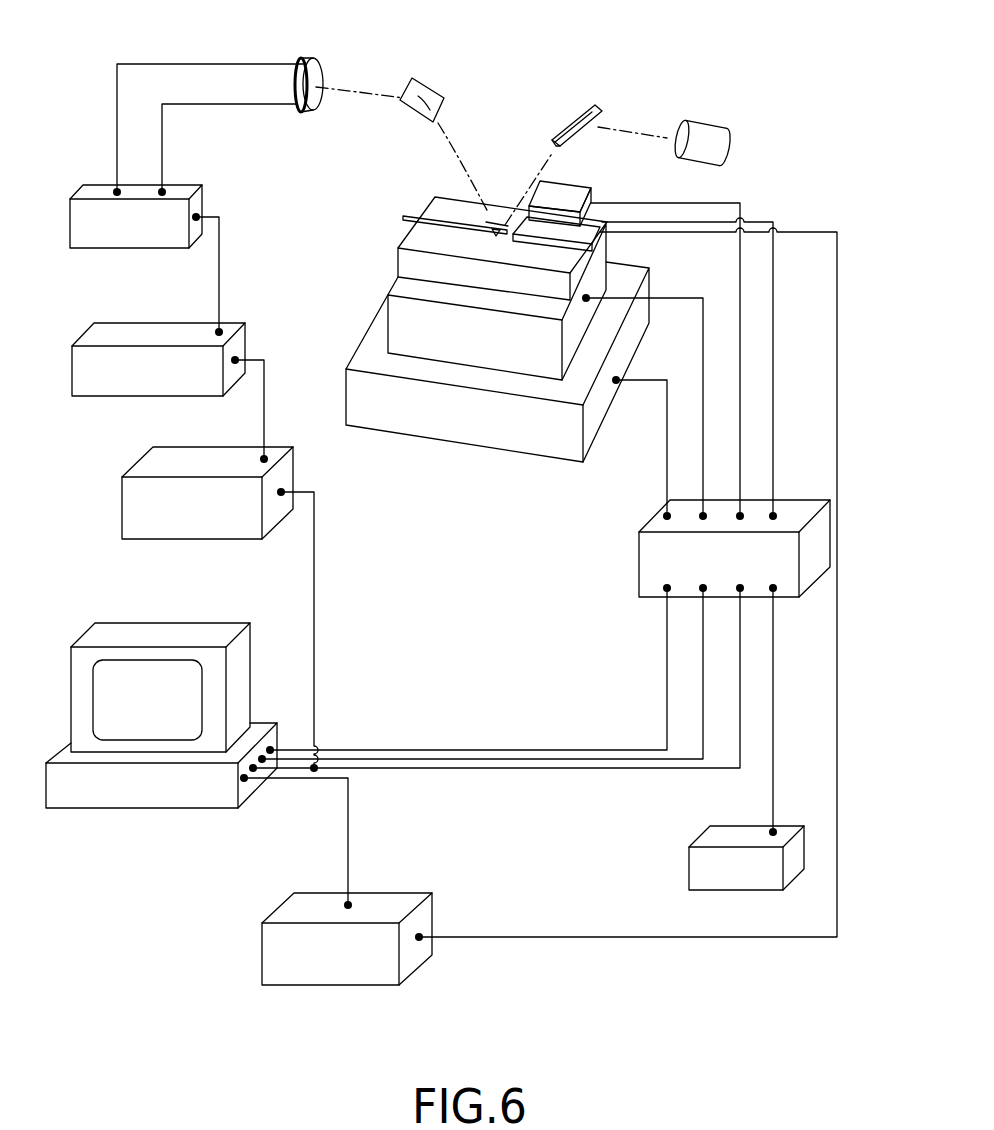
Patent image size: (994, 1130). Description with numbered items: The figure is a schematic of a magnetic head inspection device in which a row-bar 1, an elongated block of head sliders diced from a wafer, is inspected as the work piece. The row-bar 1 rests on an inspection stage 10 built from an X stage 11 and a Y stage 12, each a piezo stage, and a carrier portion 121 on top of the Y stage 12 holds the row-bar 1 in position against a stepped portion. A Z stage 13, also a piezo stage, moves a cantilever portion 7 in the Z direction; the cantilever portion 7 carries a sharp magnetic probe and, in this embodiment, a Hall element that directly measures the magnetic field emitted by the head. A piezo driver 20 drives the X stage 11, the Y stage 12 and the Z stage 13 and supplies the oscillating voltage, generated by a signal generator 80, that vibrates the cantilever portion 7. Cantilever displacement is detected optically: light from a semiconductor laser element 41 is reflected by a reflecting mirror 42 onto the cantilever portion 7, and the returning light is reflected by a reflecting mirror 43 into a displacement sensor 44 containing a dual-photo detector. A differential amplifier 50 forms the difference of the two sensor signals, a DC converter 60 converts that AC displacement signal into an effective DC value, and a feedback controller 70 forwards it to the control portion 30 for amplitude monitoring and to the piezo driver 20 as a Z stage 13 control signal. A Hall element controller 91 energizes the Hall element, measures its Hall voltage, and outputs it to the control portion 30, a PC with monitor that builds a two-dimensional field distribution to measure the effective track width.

The row-bar 1 is at (405, 216).
The cantilever portion 7 is at (499, 222).
The inspection stage 10 is at (328, 269).
The X stage 11 is at (346, 404).
The Y stage 12 is at (386, 326).
The carrier portion 121 is at (400, 244).
The Z stage 13 is at (586, 191).
The piezo driver 20 is at (638, 563).
The control portion 30 is at (180, 622).
The semiconductor laser element 41 is at (712, 130).
The reflecting mirror 42 is at (600, 107).
The reflecting mirror 43 is at (420, 80).
The displacement sensor 44 is at (306, 62).
The differential amplifier 50 is at (101, 186).
The DC converter 60 is at (136, 322).
The feedback controller 70 is at (120, 503).
The signal generator 80 is at (688, 863).
The Hall element controller 91 is at (432, 894).